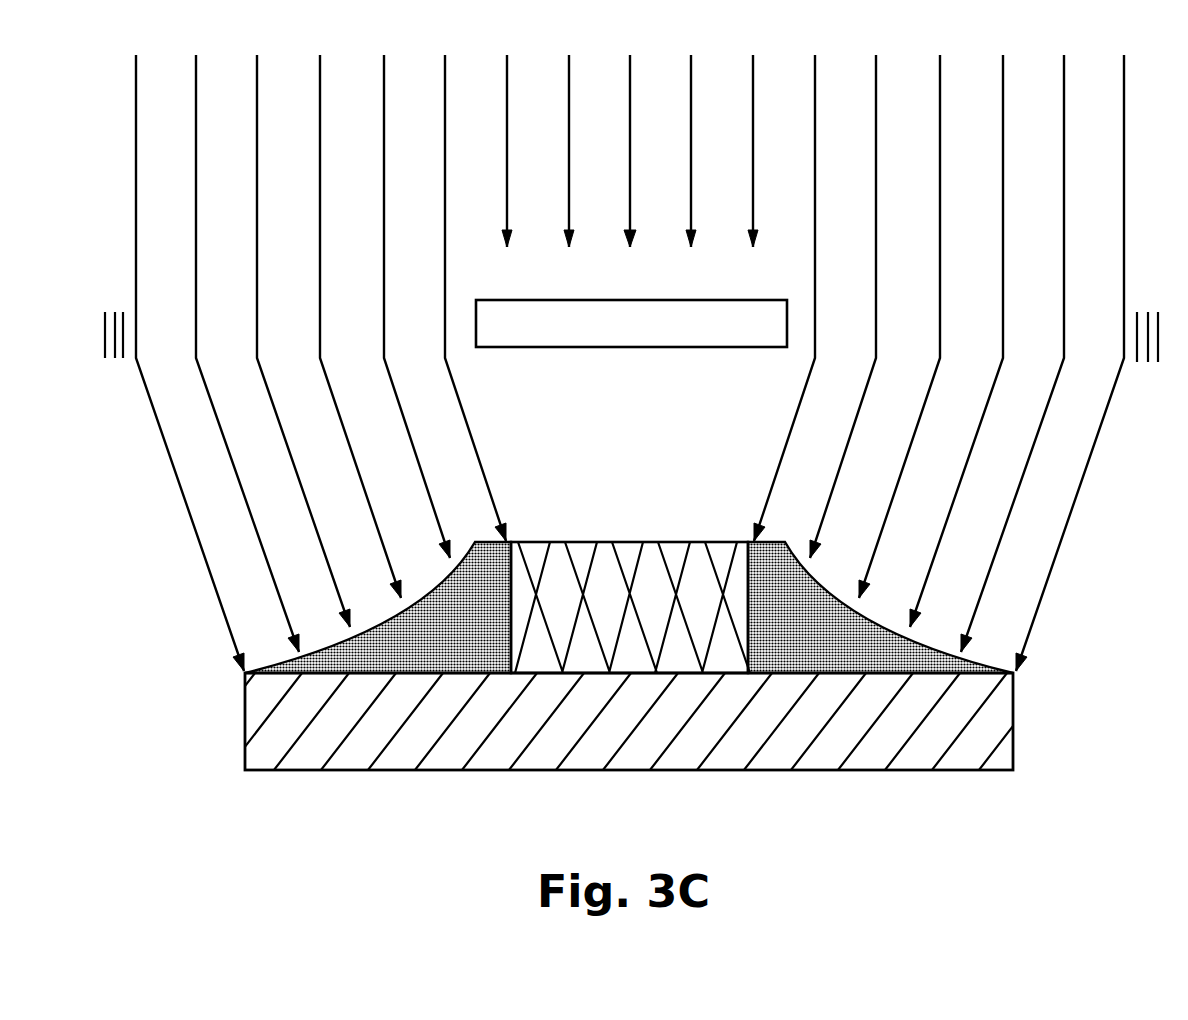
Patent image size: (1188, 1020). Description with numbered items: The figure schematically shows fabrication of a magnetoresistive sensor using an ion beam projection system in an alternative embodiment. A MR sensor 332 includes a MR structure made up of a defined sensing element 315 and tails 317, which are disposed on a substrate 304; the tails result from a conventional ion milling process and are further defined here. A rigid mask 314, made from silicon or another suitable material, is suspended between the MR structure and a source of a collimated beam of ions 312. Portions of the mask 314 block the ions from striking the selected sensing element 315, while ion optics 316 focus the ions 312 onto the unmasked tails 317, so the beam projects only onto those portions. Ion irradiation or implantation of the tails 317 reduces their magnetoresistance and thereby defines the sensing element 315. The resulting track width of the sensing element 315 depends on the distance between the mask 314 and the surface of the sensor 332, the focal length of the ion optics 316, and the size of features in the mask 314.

The collimated beam of ions 312 is at (136, 280).
The rigid mask 314 is at (631, 323).
The sensing element 315 is at (630, 607).
The ion optics 316 is at (1156, 387).
The tails 317 is at (629, 607).
The substrate 304 is at (617, 721).
The MR sensor 332 is at (815, 793).